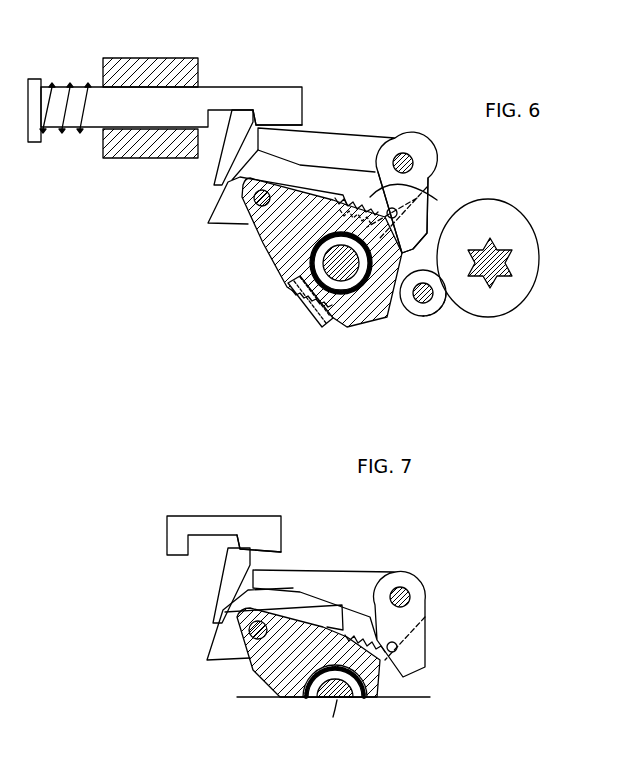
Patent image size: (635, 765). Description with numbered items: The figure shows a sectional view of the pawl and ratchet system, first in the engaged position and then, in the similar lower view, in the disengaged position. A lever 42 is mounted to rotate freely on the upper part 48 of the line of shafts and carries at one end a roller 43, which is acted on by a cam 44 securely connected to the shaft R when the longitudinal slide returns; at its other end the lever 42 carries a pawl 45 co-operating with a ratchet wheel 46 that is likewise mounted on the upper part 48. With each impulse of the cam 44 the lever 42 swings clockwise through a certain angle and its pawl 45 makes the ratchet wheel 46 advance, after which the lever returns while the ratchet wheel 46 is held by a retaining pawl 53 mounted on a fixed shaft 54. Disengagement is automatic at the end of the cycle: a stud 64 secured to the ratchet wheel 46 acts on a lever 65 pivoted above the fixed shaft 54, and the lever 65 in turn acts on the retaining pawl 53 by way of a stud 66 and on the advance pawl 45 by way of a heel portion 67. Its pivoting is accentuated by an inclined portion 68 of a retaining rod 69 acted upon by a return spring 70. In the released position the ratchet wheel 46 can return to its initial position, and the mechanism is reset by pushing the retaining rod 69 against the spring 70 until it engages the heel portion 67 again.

In FIG. 6, the lever 42 is at (265, 247).
In FIG. 7, the lever 42 is at (278, 673).
In FIG. 6, the roller 43 is at (427, 318).
In FIG. 6, the cam 44 is at (515, 233).
In FIG. 6, the pawl 45 is at (216, 206).
In FIG. 7, the pawl 45 is at (220, 655).
In FIG. 6, the ratchet wheel 46 is at (353, 207).
In FIG. 7, the ratchet wheel 46 is at (397, 693).
In FIG. 6, the upper part 48 is at (300, 305).
In FIG. 7, the upper part 48 is at (330, 719).
In FIG. 6, the retaining pawl 53 is at (473, 220).
In FIG. 7, the retaining pawl 53 is at (423, 630).
In FIG. 6, the fixed shaft 54 is at (405, 150).
In FIG. 7, the fixed shaft 54 is at (398, 587).
In FIG. 6, the stud 64 is at (375, 210).
In FIG. 6, the lever 65 is at (347, 167).
In FIG. 7, the lever 65 is at (350, 603).
In FIG. 6, the stud 66 is at (413, 225).
In FIG. 7, the stud 66 is at (400, 656).
In FIG. 6, the heel portion 67 is at (220, 162).
In FIG. 7, the heel portion 67 is at (228, 583).
In FIG. 6, the inclined portion 68 is at (288, 122).
In FIG. 7, the inclined portion 68 is at (262, 565).
In FIG. 6, the retaining rod 69 is at (245, 93).
In FIG. 7, the retaining rod 69 is at (217, 528).
In FIG. 6, the return spring 70 is at (65, 130).
In FIG. 6, the shaft R is at (494, 292).